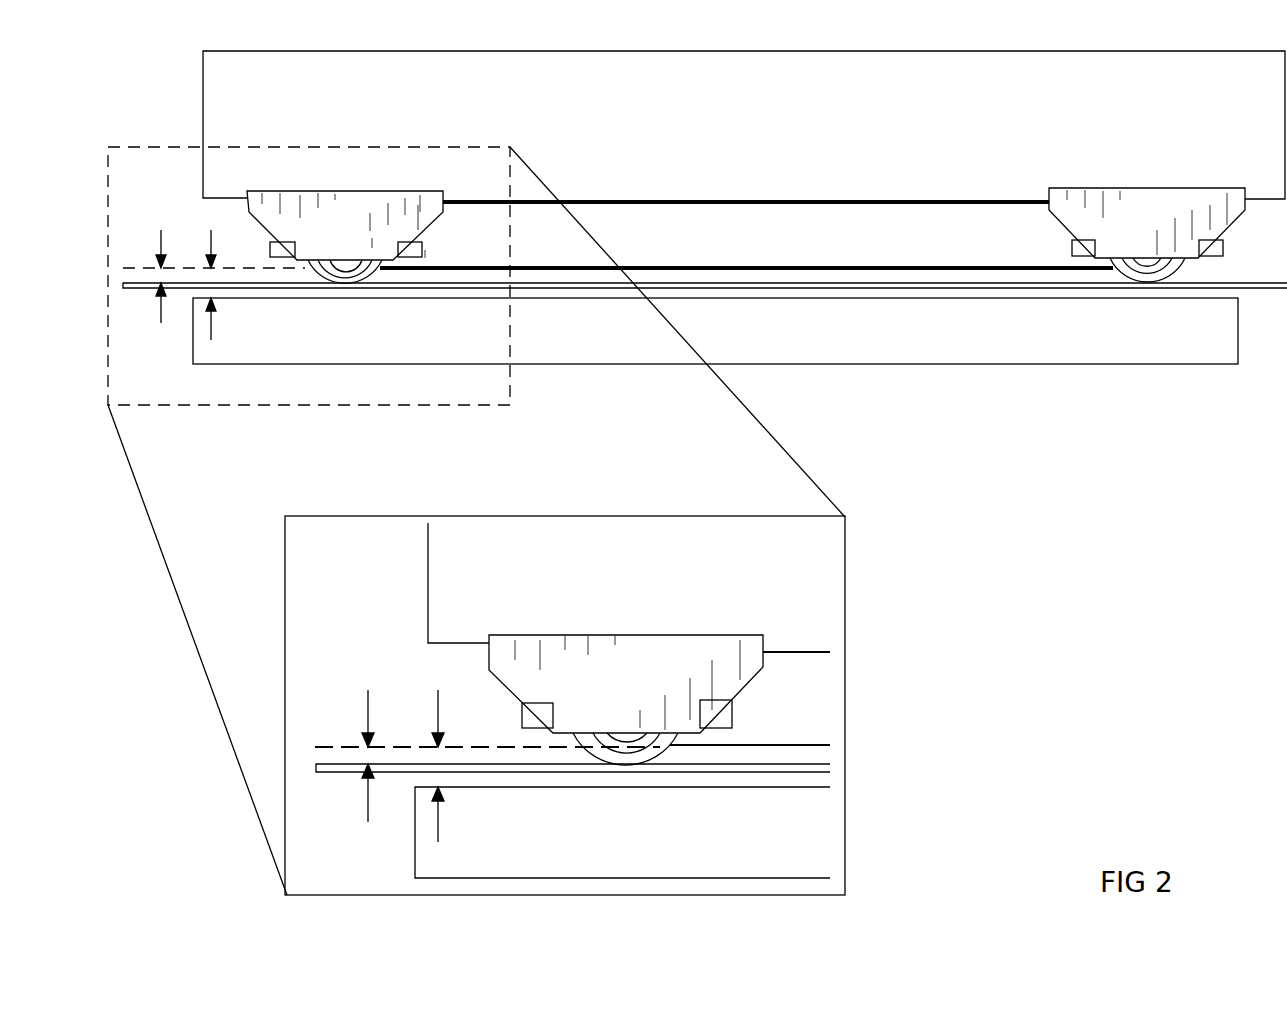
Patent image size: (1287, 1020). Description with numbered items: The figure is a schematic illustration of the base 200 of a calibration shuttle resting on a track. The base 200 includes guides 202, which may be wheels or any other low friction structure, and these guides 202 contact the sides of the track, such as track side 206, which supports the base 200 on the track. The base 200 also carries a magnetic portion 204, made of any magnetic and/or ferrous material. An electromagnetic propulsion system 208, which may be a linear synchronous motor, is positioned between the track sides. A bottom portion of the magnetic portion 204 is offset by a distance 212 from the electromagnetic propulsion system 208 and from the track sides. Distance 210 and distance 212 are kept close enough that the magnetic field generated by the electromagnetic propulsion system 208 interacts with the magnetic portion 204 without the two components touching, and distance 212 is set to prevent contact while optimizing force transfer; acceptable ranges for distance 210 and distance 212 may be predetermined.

The base 200 is at (622, 51).
The guides 202 is at (333, 228).
The magnetic portion 204 is at (718, 243).
The track side 206 is at (547, 288).
The electromagnetic propulsion system 208 is at (290, 365).
The distance 210 is at (438, 848).
The distance 212 is at (365, 670).